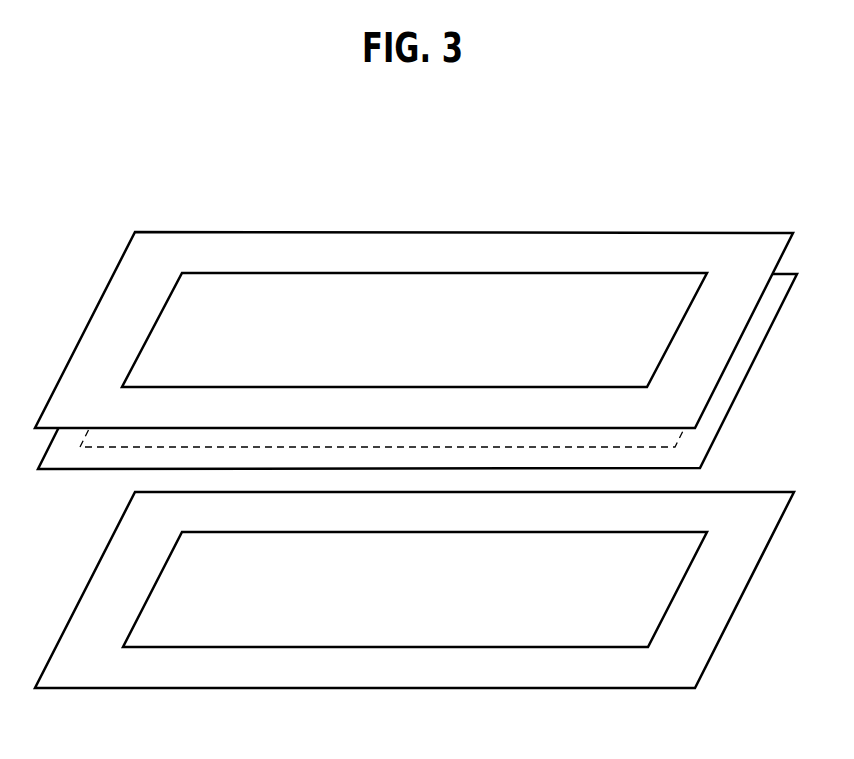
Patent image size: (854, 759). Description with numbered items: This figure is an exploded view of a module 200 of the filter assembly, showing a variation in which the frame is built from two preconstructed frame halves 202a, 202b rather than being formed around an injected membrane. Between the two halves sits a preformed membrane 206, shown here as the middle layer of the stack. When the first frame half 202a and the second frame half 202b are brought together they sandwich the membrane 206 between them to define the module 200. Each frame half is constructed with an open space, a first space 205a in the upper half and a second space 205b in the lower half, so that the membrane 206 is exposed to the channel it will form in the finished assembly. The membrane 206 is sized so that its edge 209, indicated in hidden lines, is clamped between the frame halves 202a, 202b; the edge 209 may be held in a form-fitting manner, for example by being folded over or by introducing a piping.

The module 200 is at (650, 182).
The first frame half 202a is at (168, 247).
The first space 205a is at (380, 297).
The membrane 206 is at (733, 386).
The edge of the membrane 209 is at (678, 444).
The second frame half 202b is at (230, 672).
The second space 205b is at (473, 632).